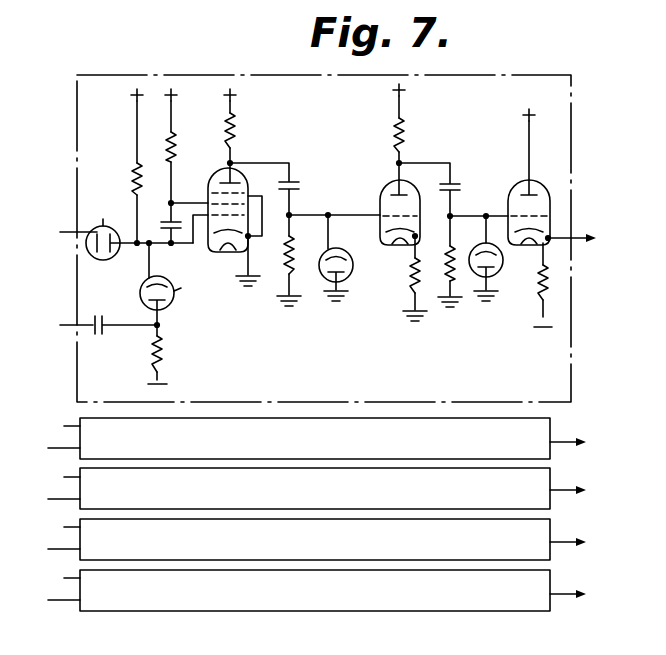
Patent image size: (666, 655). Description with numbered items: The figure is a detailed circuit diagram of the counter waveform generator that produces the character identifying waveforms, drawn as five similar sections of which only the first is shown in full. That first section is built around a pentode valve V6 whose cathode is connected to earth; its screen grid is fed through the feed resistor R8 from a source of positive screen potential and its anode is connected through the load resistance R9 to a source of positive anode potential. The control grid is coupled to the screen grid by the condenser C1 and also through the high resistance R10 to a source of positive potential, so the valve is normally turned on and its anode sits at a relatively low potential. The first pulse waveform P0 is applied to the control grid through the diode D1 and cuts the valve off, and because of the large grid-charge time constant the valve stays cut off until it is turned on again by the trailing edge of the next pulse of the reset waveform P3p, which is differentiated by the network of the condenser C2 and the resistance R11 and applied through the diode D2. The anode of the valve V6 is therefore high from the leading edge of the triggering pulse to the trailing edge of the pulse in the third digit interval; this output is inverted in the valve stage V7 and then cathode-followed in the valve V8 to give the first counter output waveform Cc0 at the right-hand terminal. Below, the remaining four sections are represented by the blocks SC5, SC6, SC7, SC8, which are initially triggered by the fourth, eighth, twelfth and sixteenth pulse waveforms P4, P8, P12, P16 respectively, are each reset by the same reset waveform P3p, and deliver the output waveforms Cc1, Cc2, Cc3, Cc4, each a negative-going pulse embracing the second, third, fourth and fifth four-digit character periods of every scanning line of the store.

The p0-pulse waveform P0 is at (65, 236).
The diode D1 is at (139, 230).
The high resistance R10 is at (118, 167).
The feed resistor R8 is at (185, 147).
The condenser C1 is at (162, 224).
The load resistance R9 is at (244, 128).
The pentode valve V6 is at (216, 227).
The diode D2 is at (174, 283).
The P3' waveform P3p is at (57, 463).
The condenser C2 is at (124, 341).
The resistance R11 is at (177, 354).
The valve stage V7 is at (387, 202).
The cathode-follower valve V8 is at (520, 218).
The Cc0 output waveform Cc0 is at (591, 241).
The p4-pulse waveform P4 is at (68, 412).
The p8-pulse waveform P8 is at (63, 468).
The p12-pulse waveform P12 is at (65, 520).
The p16-pulse waveform P16 is at (66, 570).
The circuit block SC5 is at (315, 438).
The circuit block SC6 is at (315, 488).
The circuit block SC7 is at (315, 539).
The circuit block SC8 is at (315, 590).
The Cc1 output waveform Cc1 is at (587, 442).
The Cc2 output waveform Cc2 is at (587, 490).
The Cc3 output waveform Cc3 is at (587, 542).
The Cc4 output waveform Cc4 is at (587, 594).